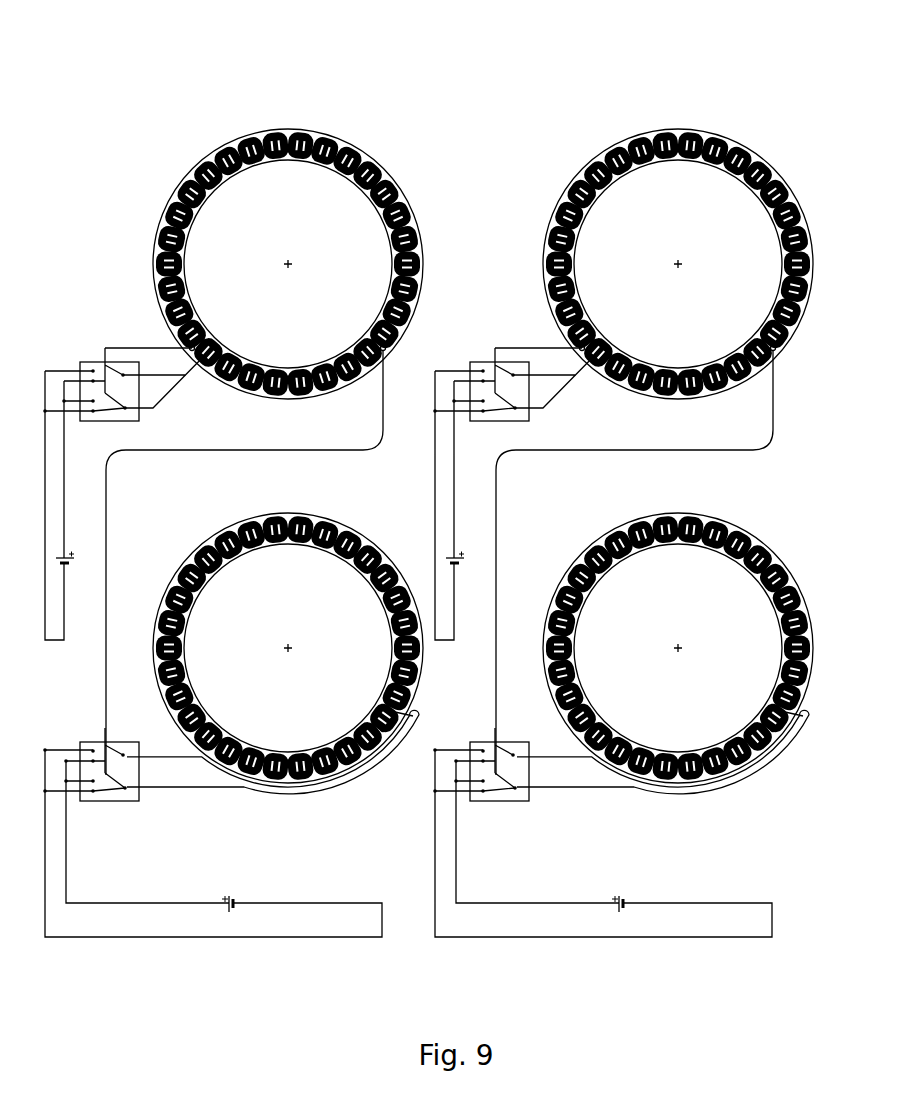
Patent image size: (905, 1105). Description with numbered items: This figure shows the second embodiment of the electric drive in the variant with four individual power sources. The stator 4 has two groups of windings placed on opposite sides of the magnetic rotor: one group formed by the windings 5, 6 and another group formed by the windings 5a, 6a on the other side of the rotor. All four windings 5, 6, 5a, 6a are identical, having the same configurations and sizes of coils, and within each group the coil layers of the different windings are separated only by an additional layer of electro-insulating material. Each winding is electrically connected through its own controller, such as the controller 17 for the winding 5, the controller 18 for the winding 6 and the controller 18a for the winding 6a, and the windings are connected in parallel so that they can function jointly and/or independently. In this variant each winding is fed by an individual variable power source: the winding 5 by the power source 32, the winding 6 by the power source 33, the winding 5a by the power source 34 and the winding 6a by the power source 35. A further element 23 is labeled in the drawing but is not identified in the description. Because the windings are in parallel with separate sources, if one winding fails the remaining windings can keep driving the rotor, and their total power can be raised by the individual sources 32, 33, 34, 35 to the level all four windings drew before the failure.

The stator 4 is at (393, 77).
The winding 5 is at (220, 148).
The winding 5a is at (610, 148).
The winding 6 is at (190, 550).
The winding 6a is at (580, 550).
The controller 17 is at (92, 361).
The individual variable power source 34 is at (482, 361).
The controller 18 is at (139, 797).
The controller 18a is at (529, 797).
The individual variable power source 32 is at (75, 567).
The voltage source 23 is at (465, 567).
The individual variable power source 33 is at (220, 908).
The individual variable power source 35 is at (610, 908).